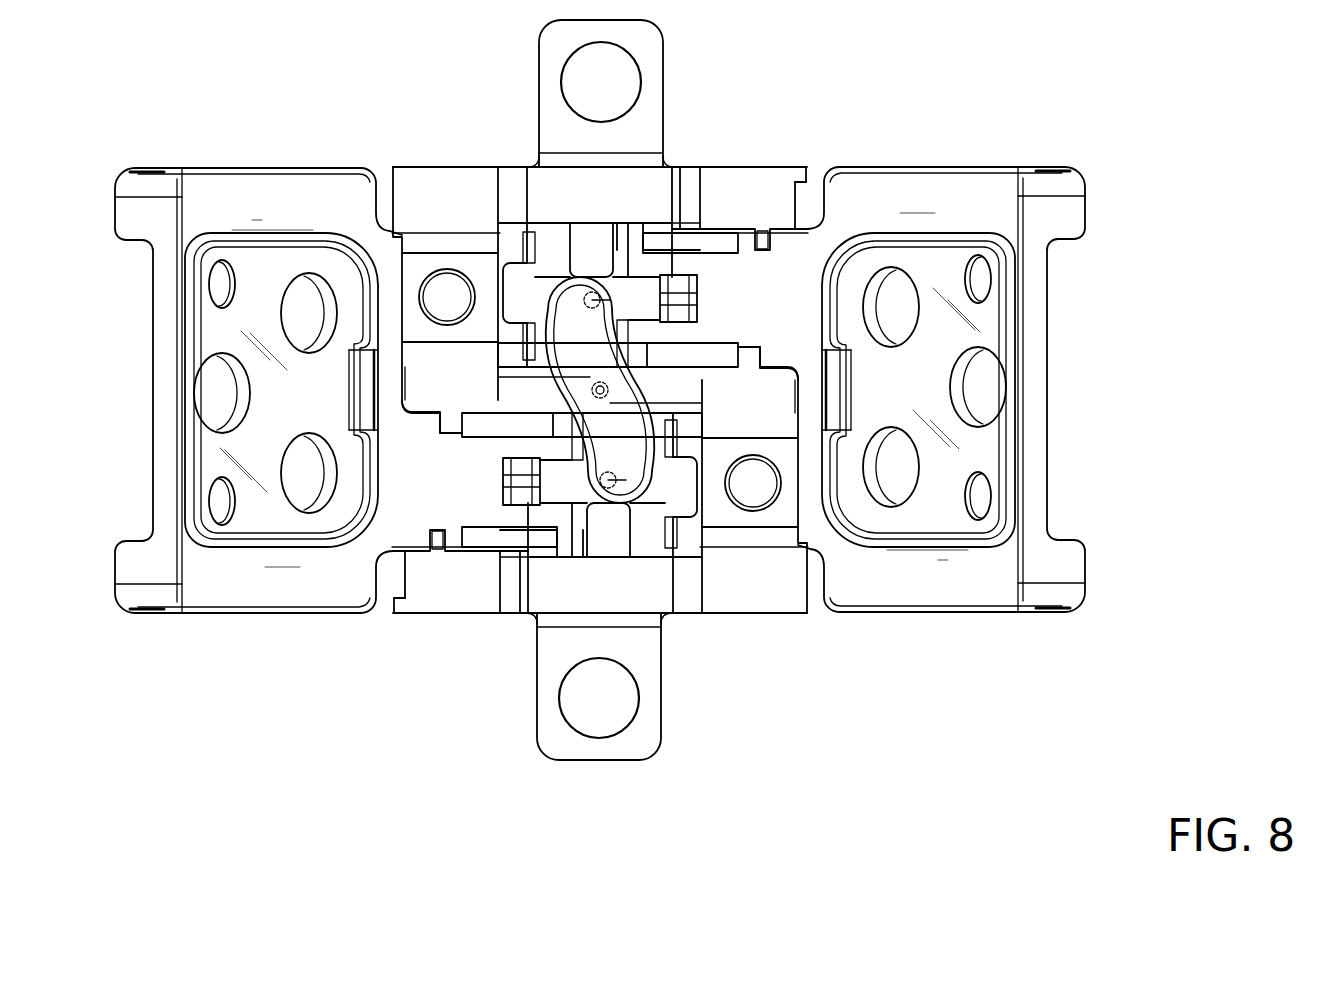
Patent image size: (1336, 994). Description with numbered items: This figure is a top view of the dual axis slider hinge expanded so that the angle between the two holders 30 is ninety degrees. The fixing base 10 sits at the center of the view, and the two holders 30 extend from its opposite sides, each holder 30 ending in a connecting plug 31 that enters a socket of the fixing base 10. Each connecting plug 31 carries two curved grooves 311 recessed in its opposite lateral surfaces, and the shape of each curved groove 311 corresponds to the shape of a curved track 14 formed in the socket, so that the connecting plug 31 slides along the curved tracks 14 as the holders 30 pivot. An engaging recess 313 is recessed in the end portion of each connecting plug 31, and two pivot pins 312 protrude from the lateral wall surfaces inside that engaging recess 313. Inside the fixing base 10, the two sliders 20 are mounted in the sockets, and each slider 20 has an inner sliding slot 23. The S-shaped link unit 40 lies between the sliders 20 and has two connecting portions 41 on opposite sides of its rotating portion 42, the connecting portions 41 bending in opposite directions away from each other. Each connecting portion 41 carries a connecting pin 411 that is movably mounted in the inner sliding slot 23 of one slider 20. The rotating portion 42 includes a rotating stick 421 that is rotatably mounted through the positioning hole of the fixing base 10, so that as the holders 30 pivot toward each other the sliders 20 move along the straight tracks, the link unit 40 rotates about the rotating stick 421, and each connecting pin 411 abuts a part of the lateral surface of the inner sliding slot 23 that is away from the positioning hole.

The fixing base 10 is at (427, 188).
The curved track 14 is at (767, 243).
The slider 20 is at (587, 242).
The inner sliding slot 23 is at (500, 278).
The holder 30 is at (931, 196).
The connecting plug 31 is at (718, 267).
The curved groove 311 is at (770, 240).
The pivot pin 312 is at (680, 280).
The engaging recess 313 is at (645, 250).
The link unit 40 is at (563, 390).
The connecting portion 41 is at (567, 337).
The connecting pin 411 is at (573, 293).
The rotating portion 42 is at (617, 407).
The rotating stick 421 is at (703, 300).